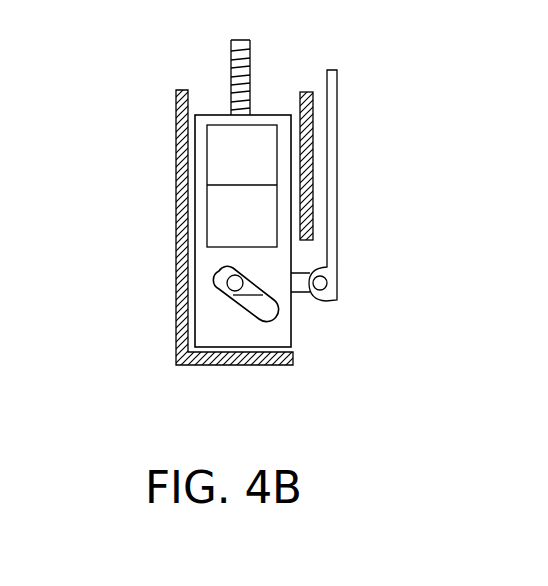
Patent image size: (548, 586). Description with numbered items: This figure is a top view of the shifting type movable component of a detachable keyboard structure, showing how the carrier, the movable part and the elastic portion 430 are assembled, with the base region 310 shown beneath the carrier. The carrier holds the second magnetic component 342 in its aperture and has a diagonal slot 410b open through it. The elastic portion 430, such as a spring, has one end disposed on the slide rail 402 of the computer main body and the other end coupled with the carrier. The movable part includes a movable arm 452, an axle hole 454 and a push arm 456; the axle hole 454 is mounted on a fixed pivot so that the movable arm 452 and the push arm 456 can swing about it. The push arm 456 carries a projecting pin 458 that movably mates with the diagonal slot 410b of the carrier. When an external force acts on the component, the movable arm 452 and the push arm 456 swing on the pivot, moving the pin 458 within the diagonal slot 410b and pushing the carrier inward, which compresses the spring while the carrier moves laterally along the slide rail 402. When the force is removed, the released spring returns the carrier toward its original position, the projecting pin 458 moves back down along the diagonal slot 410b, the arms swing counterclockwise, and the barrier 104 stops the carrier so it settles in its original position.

The barrier 104 is at (176, 104).
The base plate 310 is at (215, 365).
The second magnetic component 342 is at (207, 222).
The elastic portion 430 is at (231, 59).
The slide rail 402 is at (252, 58).
The movable arm 452 is at (338, 158).
The axle hole 454 is at (333, 283).
The push arm 456 is at (306, 298).
The diagonal slot 410b is at (273, 312).
The projecting pin 458 is at (218, 272).